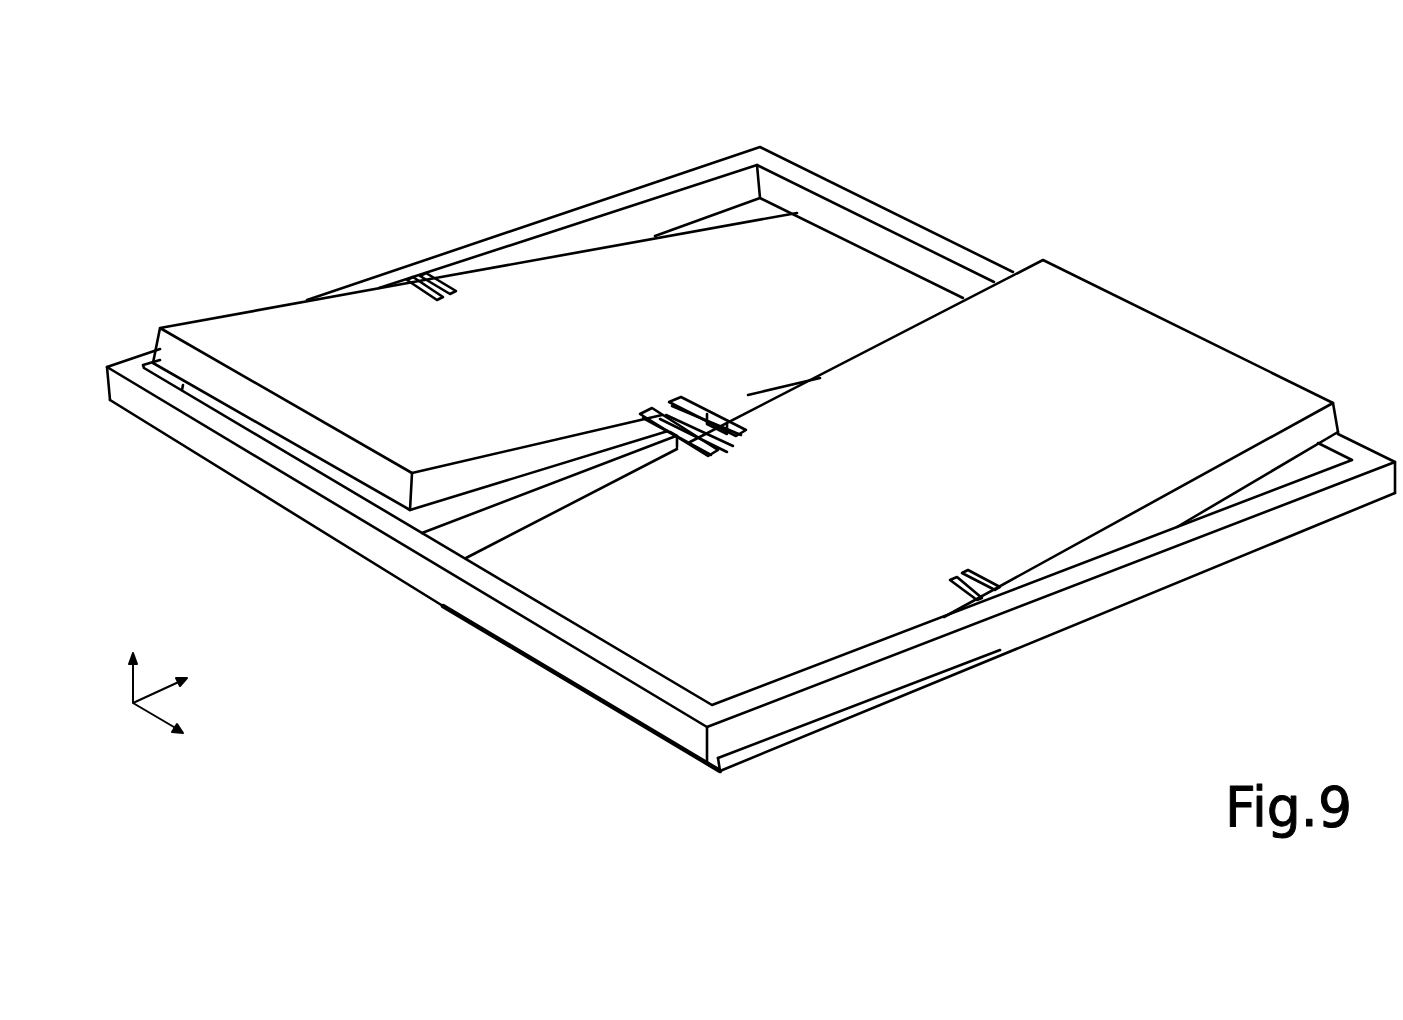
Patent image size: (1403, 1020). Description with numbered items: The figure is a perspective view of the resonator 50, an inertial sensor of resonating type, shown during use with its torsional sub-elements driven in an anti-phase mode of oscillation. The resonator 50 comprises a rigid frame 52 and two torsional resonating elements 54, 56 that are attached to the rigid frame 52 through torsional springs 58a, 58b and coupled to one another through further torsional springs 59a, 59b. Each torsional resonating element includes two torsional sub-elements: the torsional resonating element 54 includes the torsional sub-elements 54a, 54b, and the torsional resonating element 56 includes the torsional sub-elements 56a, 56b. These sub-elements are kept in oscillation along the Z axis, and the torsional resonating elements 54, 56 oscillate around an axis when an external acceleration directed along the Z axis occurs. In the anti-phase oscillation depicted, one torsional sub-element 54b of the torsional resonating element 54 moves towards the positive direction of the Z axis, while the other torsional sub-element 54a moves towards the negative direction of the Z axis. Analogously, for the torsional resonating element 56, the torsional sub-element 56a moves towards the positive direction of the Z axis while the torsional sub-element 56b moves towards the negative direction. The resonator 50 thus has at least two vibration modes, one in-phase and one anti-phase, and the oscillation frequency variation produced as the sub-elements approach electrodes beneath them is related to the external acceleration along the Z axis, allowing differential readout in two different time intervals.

The resonator 50 is at (751, 430).
The rigid frame 52 is at (250, 470).
The torsional resonating element 54 is at (550, 277).
The torsional sub-element 54a is at (222, 328).
The torsional sub-element 54b is at (802, 248).
The torsional resonating element 56 is at (880, 592).
The torsional sub-element 56a is at (742, 650).
The torsional sub-element 56b is at (1125, 335).
The torsional spring 58a is at (420, 277).
The torsional spring 58b is at (987, 577).
The further torsional spring 59a is at (662, 405).
The further torsional spring 59b is at (683, 401).